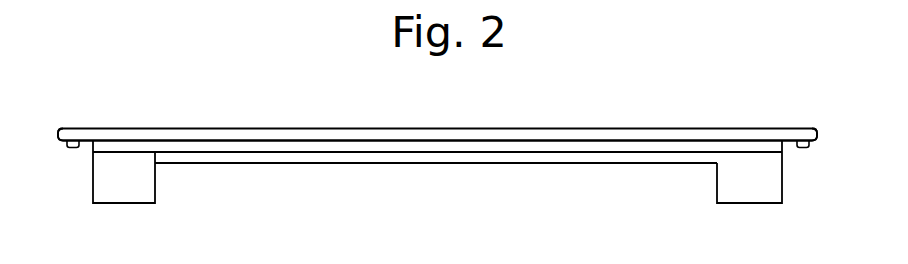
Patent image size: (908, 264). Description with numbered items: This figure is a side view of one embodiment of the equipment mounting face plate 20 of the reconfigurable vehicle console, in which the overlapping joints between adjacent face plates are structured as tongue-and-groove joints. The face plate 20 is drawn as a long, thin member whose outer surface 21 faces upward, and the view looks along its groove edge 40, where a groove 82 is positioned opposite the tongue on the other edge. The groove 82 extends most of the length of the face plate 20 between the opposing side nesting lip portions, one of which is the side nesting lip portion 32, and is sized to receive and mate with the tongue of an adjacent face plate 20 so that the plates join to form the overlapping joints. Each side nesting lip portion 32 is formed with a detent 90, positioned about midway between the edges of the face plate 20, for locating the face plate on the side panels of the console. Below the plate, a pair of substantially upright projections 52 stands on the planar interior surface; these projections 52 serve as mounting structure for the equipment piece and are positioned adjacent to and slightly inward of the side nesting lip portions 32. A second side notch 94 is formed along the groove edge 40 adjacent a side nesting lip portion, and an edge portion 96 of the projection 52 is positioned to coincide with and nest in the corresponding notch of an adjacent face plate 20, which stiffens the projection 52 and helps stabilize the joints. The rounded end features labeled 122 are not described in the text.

The face plate 20 is at (368, 163).
The outer surface 21 is at (280, 128).
The side nesting lip portion 32 is at (58, 142).
The groove edge 40 is at (202, 140).
The upright projection 52 is at (93, 187).
The groove 82 is at (240, 150).
The detent 90 is at (72, 147).
The second side notch 94 is at (120, 152).
The edge portion of projection 96 is at (743, 190).
The rounded panel end 122 is at (60, 133).